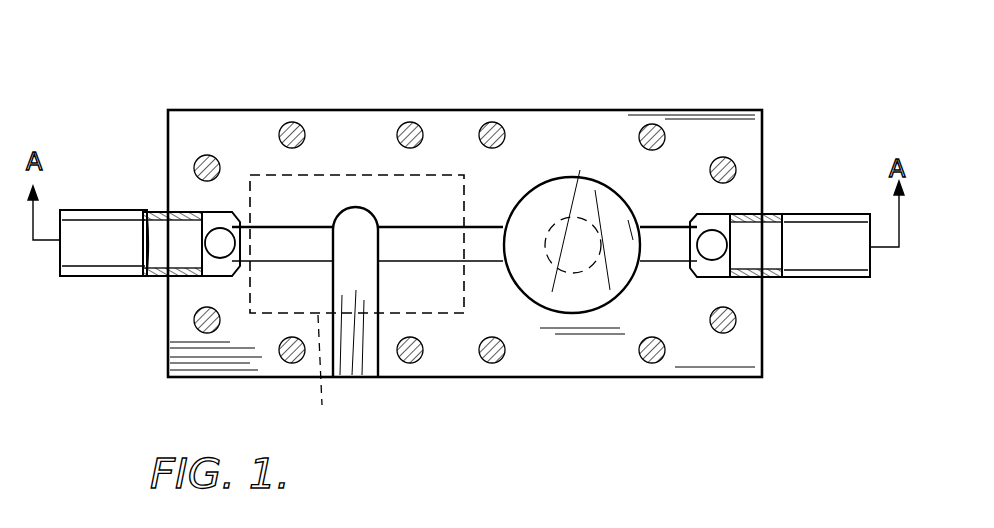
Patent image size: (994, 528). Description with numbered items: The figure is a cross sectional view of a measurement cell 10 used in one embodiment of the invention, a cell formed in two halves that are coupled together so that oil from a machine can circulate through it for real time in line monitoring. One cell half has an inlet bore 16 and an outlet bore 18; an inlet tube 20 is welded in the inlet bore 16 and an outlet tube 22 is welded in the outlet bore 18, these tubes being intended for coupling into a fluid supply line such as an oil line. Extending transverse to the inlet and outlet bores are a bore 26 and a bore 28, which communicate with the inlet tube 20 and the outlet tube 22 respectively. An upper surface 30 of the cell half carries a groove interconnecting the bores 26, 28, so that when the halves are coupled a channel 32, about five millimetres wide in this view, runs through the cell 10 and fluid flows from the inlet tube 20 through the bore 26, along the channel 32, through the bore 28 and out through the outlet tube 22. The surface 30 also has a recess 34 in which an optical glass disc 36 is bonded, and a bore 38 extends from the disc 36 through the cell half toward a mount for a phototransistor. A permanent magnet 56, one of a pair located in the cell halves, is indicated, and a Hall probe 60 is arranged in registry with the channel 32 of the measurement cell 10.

The measurement cell 10 is at (712, 103).
The inlet bore 16 is at (182, 210).
The outlet bore 18 is at (745, 213).
The inlet tube 20 is at (128, 277).
The outlet tube 22 is at (837, 253).
The bore 26 is at (220, 246).
The bore 28 is at (720, 252).
The upper surface 30 is at (440, 323).
The channel 32 is at (308, 238).
The recess 34 is at (535, 305).
The optical glass disc 36 is at (566, 183).
The bore 38 is at (577, 273).
The permanent magnet 56 is at (328, 381).
The Hall probe 60 is at (360, 288).